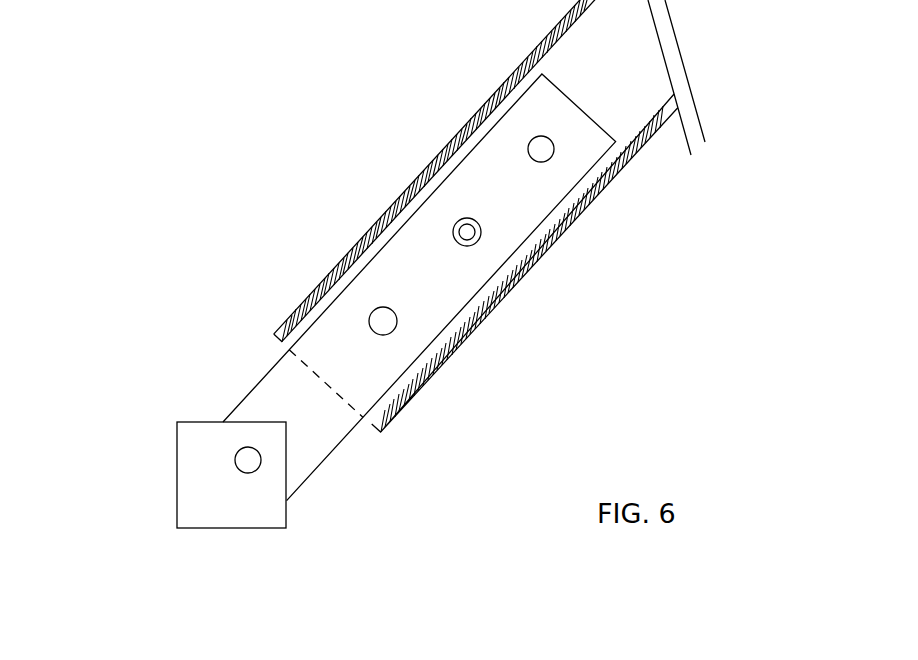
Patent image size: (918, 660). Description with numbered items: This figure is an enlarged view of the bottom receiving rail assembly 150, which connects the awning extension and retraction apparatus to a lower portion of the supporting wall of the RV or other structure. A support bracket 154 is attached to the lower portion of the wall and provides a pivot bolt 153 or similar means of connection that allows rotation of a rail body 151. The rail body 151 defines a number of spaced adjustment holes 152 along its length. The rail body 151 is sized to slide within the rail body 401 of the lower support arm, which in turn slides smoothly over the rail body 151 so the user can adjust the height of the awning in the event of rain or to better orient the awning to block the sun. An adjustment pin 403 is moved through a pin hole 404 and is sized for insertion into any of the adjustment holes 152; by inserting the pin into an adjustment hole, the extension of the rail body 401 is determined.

The bottom receiving rail assembly 150 is at (213, 357).
The rail body 151 is at (343, 452).
The adjustment holes 152 is at (392, 324).
The pivot bolt 153 is at (239, 452).
The support bracket 154 is at (177, 476).
The rail body 401 is at (613, 198).
The adjustment pin 403 is at (463, 229).
The pin hole 404 is at (454, 227).